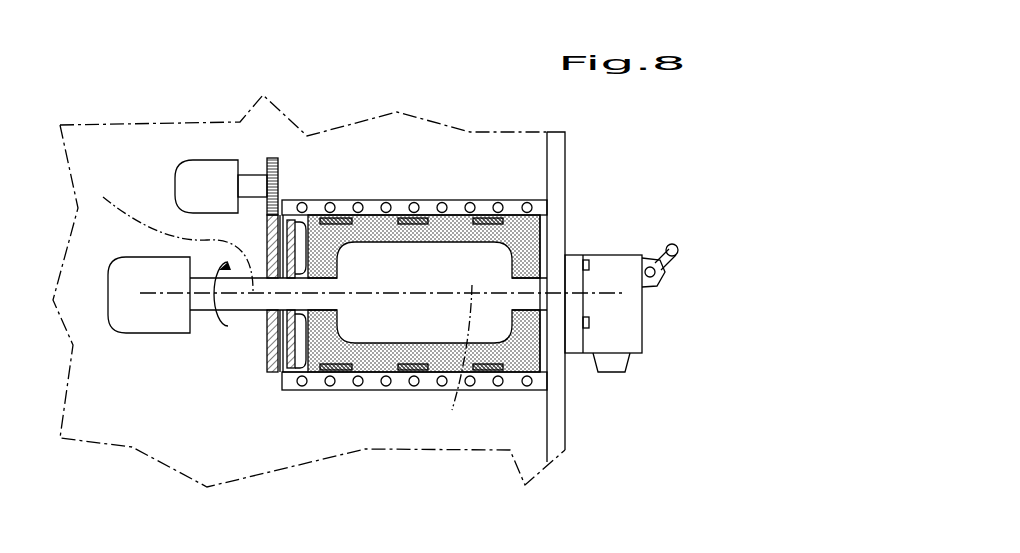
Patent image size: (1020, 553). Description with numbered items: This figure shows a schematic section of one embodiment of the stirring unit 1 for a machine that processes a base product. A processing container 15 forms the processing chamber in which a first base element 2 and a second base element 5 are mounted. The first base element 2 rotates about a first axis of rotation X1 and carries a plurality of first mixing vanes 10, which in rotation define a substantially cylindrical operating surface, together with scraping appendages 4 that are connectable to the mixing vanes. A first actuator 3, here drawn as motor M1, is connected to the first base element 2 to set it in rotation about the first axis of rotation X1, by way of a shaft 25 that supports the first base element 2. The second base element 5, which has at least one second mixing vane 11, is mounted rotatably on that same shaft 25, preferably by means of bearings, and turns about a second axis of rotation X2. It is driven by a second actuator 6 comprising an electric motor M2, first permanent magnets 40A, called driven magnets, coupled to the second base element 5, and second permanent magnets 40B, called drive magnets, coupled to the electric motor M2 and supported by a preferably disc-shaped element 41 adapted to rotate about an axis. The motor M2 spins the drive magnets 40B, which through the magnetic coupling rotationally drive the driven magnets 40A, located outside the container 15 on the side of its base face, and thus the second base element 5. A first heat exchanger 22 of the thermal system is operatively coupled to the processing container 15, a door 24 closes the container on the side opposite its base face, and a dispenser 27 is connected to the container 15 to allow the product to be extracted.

The stirring unit 1 is at (400, 138).
The first base element 2 is at (461, 252).
The first actuator 3 is at (156, 342).
The first motor M1 is at (142, 341).
The scraping appendages 4 is at (343, 198).
The second base element 5 is at (320, 324).
The second actuator 6 is at (192, 283).
The electric motor M2 is at (209, 163).
The first permanent magnets 40A is at (293, 198).
The second permanent magnets 40B is at (262, 230).
The first mixing vanes 10 is at (538, 237).
The second mixing vane 11 is at (306, 352).
The processing container 15 is at (549, 363).
The first heat exchanger 22 is at (400, 398).
The door 24 is at (580, 241).
The shaft 25 is at (271, 311).
The dispenser 27 is at (664, 325).
The element 41 is at (263, 317).
The first axis of rotation X1 is at (456, 362).
The second axis of rotation X2 is at (174, 231).